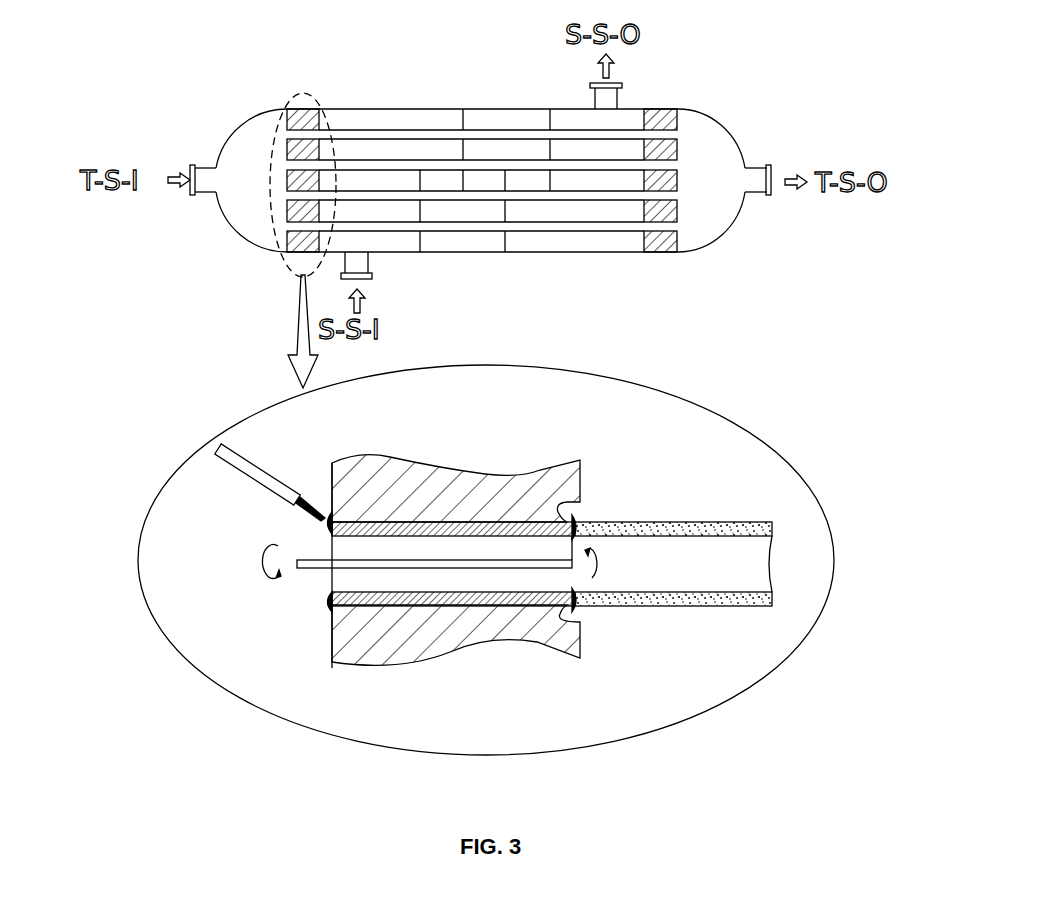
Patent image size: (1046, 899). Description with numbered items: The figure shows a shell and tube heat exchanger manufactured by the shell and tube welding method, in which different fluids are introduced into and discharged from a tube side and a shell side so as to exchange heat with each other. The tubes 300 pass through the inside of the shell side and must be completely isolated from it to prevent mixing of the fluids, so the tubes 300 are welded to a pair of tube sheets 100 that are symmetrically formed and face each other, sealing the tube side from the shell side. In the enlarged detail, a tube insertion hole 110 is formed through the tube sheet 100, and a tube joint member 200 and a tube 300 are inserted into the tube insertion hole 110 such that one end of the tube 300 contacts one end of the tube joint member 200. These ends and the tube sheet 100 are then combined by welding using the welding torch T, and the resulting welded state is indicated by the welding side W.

The tube sheet 100 is at (303, 122).
The tube joint member 200 is at (303, 270).
The tube 300 is at (370, 136).
The tube insertion hole 110 is at (416, 582).
The welding torch T is at (315, 560).
The welding side W is at (328, 606).